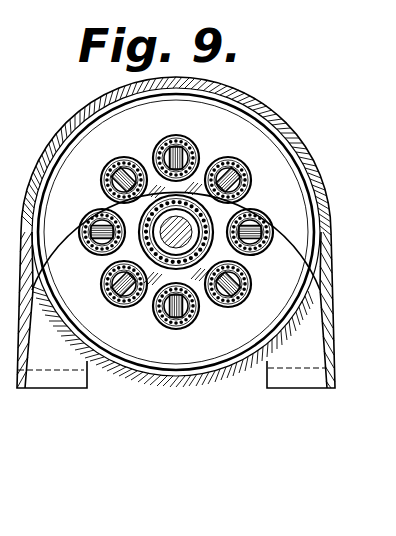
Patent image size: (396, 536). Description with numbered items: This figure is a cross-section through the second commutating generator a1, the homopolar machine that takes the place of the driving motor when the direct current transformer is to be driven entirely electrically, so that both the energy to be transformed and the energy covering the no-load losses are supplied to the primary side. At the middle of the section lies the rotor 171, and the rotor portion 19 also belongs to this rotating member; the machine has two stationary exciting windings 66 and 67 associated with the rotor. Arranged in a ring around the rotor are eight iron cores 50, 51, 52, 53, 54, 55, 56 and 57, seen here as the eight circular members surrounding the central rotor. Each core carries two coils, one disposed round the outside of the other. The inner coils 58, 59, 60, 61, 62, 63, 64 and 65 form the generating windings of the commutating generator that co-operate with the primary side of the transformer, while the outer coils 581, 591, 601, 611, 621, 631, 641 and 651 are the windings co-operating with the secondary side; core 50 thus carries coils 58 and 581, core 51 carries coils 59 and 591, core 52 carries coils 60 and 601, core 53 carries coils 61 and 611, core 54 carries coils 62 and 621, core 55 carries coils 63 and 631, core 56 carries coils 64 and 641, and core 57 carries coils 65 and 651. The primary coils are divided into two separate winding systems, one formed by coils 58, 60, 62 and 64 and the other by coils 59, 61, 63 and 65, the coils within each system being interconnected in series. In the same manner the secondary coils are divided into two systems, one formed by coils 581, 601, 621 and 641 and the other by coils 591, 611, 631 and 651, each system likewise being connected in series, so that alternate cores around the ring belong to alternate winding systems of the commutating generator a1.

The commutating generator a1 is at (93, 105).
The primary generating coil 65 is at (186, 144).
The secondary coil 651 is at (190, 144).
The iron core 57 is at (192, 146).
The primary generating coil 58 is at (107, 166).
The secondary coil 581 is at (118, 166).
The iron core 50 is at (124, 170).
The primary generating coil 64 is at (248, 165).
The secondary coil 641 is at (248, 174).
The iron core 56 is at (252, 185).
The stationary exciting winding 66 is at (179, 235).
The rotor 171 is at (142, 240).
The primary generating coil 63 is at (270, 229).
The secondary coil 631 is at (270, 234).
The iron core 55 is at (258, 240).
The stationary exciting winding 67 is at (248, 298).
The primary generating coil 62 is at (243, 301).
The secondary coil 621 is at (248, 301).
The iron core 54 is at (229, 292).
The rotor 19 is at (202, 284).
The primary generating coil 61 is at (166, 323).
The secondary coil 611 is at (162, 323).
The iron core 53 is at (170, 312).
The primary generating coil 60 is at (121, 280).
The secondary coil 601 is at (112, 302).
The iron core 52 is at (108, 302).
The iron core 51 is at (87, 221).
The primary generating coil 59 is at (90, 204).
The secondary coil 591 is at (87, 231).